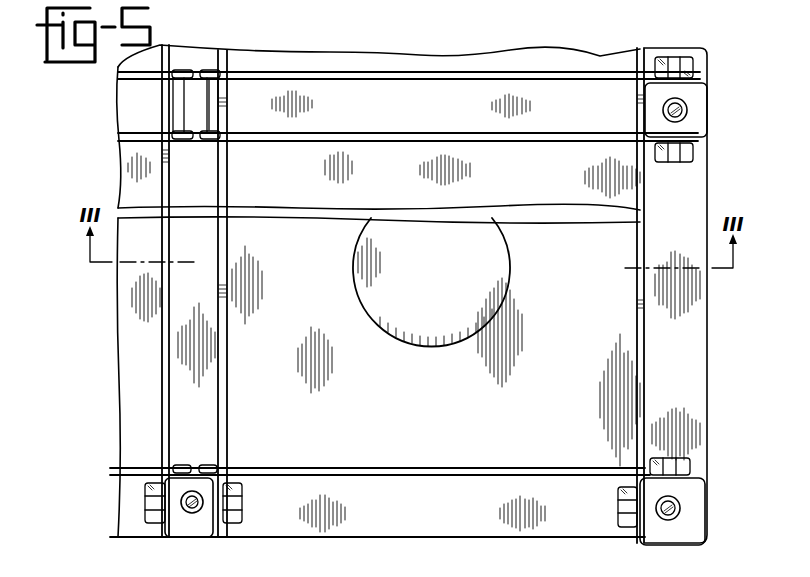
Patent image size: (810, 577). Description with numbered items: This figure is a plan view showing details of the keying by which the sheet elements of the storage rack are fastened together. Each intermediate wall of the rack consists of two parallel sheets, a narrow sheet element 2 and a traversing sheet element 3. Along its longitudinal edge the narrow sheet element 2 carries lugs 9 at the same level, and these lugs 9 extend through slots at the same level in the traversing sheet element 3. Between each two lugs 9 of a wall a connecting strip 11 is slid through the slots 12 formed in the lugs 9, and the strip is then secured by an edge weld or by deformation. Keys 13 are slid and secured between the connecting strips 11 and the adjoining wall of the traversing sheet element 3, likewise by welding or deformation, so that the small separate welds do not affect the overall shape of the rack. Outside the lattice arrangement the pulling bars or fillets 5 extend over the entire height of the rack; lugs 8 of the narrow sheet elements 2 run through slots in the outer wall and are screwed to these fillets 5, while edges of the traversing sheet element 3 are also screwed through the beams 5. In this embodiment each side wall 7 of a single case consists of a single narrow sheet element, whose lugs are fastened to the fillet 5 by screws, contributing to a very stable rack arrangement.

The narrow sheet element 2 is at (376, 70).
The traversing sheet element 3 is at (222, 348).
The bar or fillet 5 is at (706, 113).
The side wall 7 is at (422, 472).
The lug 8 is at (656, 72).
The lug 9 is at (210, 72).
The connecting strip 11 is at (180, 97).
The slot 12 is at (210, 142).
The key 13 is at (175, 113).